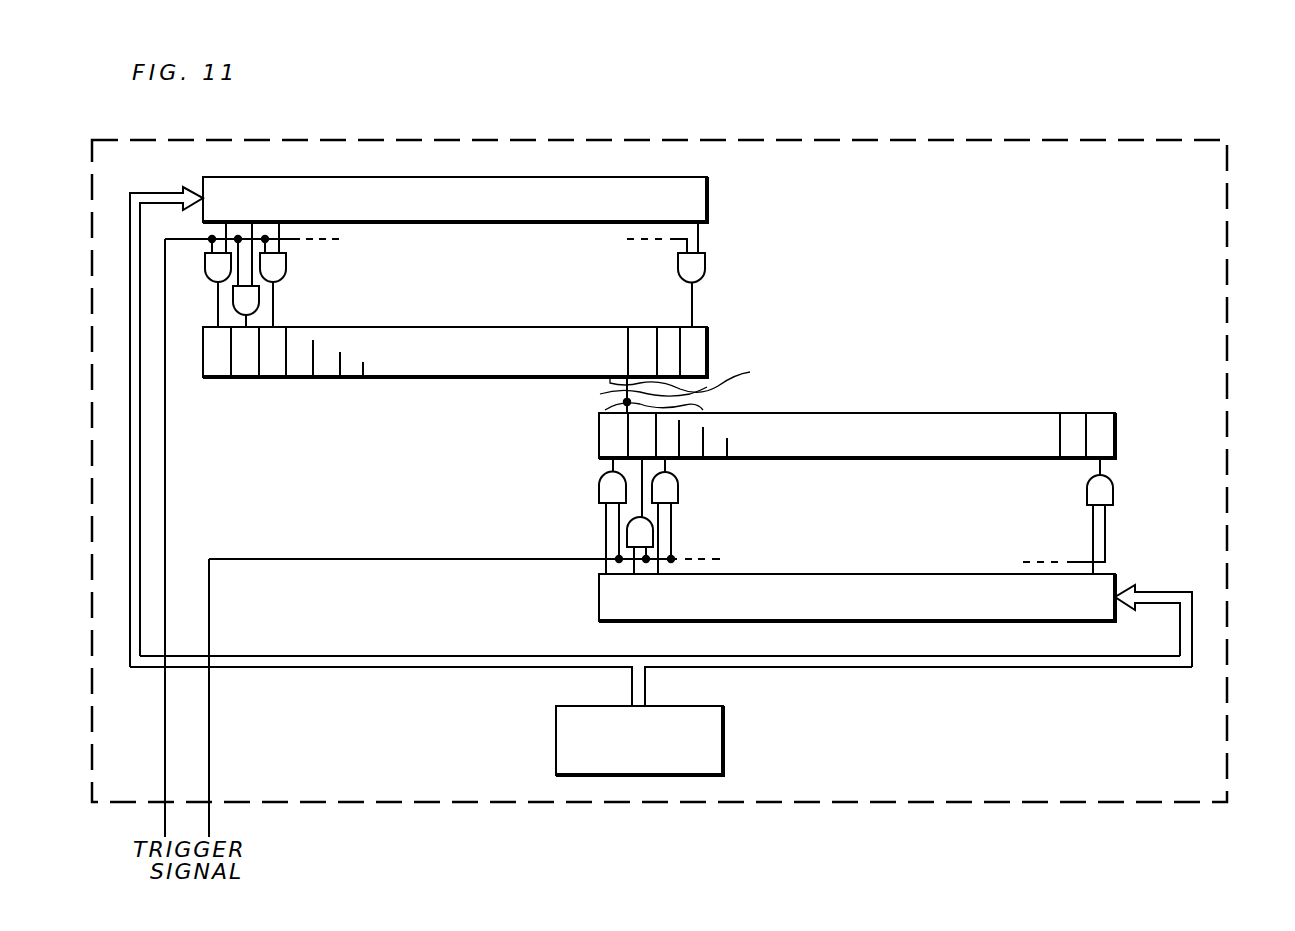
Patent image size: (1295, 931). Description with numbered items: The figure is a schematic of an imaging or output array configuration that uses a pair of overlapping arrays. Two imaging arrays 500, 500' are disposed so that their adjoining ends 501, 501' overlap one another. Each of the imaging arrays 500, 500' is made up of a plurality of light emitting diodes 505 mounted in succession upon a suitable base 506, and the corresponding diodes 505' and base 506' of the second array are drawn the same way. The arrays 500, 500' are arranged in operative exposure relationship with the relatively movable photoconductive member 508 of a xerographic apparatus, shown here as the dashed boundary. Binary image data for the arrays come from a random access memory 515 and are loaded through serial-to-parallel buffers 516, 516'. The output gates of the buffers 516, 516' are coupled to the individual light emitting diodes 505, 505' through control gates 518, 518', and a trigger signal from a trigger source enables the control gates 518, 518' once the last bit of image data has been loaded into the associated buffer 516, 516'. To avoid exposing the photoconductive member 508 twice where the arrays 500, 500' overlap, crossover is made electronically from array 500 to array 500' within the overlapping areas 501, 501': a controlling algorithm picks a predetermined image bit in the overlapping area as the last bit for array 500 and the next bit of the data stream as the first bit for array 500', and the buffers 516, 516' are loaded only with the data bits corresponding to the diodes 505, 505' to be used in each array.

The imaging array 500 is at (455, 325).
The imaging array 500' is at (857, 409).
The adjoining end 501 is at (697, 386).
The adjoining end 501' is at (565, 417).
The light emitting diodes 505 is at (450, 372).
The storage cells of second unit 505' is at (858, 455).
The base 506 is at (455, 372).
The storage register of second unit 506' is at (857, 455).
The photoconductive member 508 is at (1227, 600).
The random access memory 515 is at (723, 735).
The serial-to-parallel buffer 516 is at (493, 199).
The serial-to-parallel buffer 516' is at (810, 597).
The control gates 518 is at (463, 274).
The control gates 518' is at (661, 516).